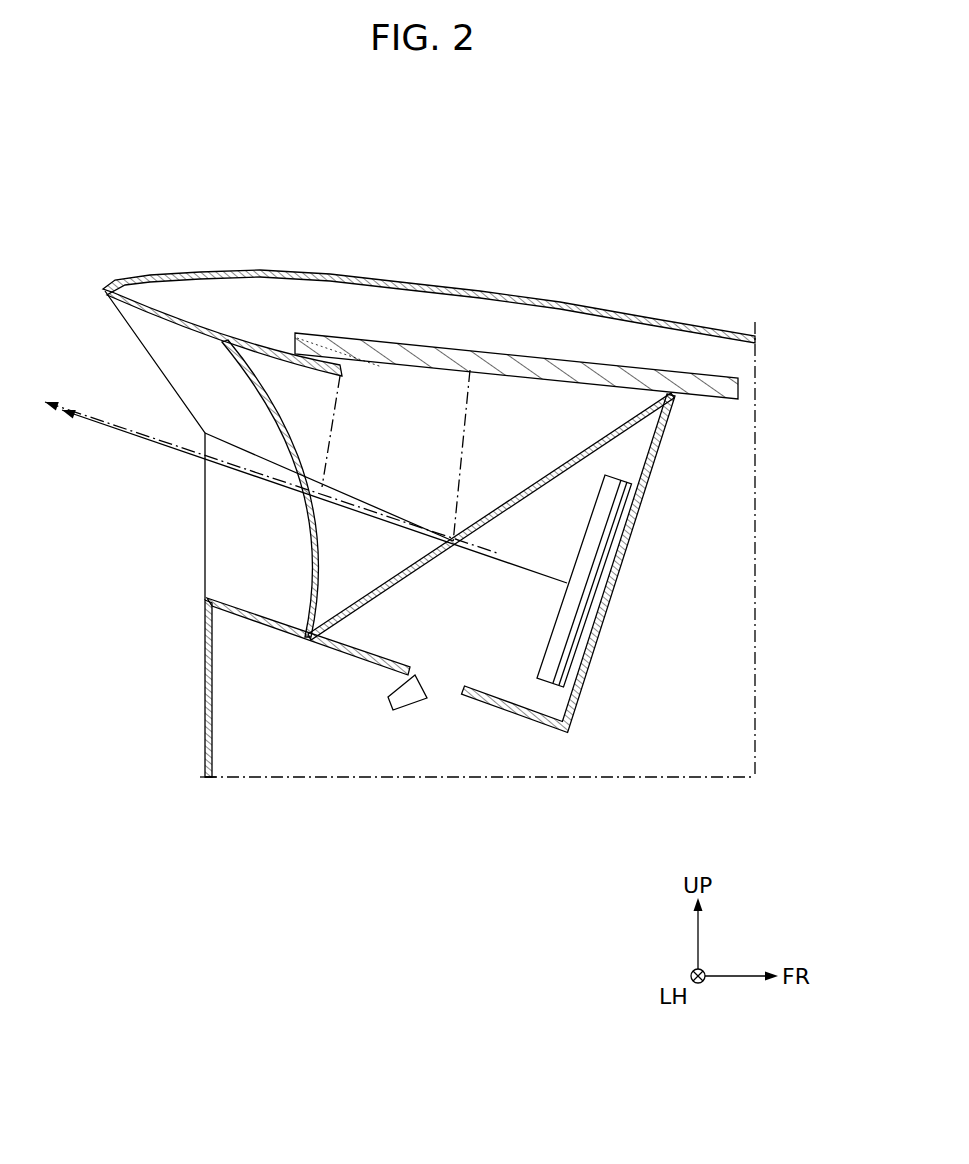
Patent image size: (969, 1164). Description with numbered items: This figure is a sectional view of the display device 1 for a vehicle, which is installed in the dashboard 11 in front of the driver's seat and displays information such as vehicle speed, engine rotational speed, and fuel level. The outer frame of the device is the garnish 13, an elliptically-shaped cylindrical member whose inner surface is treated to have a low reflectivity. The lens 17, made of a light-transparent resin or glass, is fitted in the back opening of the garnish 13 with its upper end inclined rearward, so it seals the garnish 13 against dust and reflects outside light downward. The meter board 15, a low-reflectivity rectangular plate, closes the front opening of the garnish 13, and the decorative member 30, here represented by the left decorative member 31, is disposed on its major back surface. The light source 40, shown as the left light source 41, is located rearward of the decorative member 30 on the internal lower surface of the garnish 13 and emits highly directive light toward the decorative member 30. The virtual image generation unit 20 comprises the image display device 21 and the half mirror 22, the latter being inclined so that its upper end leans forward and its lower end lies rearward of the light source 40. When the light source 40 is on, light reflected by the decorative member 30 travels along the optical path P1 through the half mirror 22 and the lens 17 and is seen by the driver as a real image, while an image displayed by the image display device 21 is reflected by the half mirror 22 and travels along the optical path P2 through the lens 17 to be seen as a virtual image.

The display device for a vehicle 1 is at (115, 179).
The dashboard 11 is at (405, 282).
The garnish 13 is at (376, 432).
The meter board 15 is at (660, 466).
The lens 17 is at (256, 380).
The virtual image generation unit 20 is at (516, 309).
The image display device 21 is at (517, 354).
The half mirror 22 is at (580, 443).
The decorative member 30 is at (699, 581).
The left decorative member 31 is at (592, 553).
The light source 40 is at (267, 687).
The left light source 41 is at (390, 702).
The optical path P1 is at (146, 440).
The optical path P2 is at (117, 420).